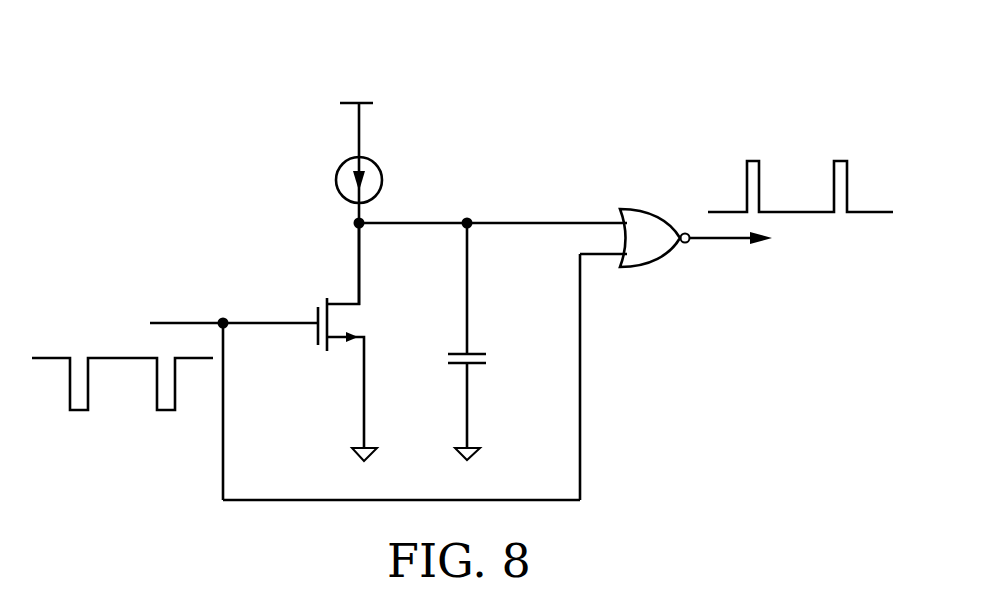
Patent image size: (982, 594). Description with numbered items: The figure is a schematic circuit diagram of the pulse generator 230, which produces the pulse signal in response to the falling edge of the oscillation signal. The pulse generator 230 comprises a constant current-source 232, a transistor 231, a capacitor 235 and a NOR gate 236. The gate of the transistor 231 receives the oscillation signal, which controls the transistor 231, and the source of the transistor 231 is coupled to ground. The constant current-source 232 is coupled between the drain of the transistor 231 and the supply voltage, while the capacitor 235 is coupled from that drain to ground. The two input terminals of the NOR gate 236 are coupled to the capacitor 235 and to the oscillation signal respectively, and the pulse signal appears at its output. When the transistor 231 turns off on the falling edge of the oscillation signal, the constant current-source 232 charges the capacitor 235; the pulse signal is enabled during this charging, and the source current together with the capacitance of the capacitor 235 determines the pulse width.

The pulse generator 230 is at (812, 31).
The transistor 231 is at (315, 335).
The constant current-source 232 is at (337, 172).
The capacitor 235 is at (468, 355).
The NOR gate 236 is at (640, 210).